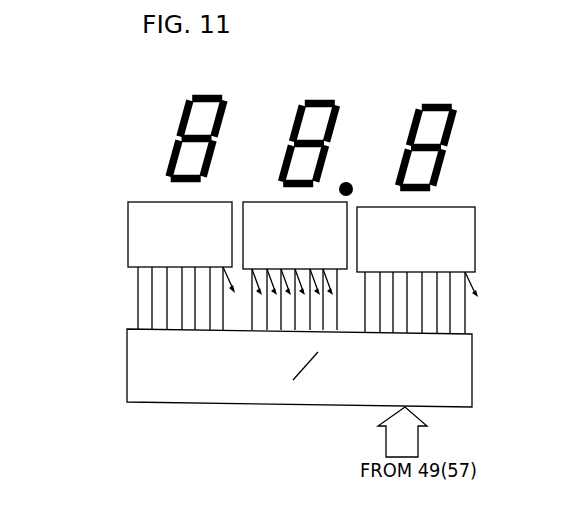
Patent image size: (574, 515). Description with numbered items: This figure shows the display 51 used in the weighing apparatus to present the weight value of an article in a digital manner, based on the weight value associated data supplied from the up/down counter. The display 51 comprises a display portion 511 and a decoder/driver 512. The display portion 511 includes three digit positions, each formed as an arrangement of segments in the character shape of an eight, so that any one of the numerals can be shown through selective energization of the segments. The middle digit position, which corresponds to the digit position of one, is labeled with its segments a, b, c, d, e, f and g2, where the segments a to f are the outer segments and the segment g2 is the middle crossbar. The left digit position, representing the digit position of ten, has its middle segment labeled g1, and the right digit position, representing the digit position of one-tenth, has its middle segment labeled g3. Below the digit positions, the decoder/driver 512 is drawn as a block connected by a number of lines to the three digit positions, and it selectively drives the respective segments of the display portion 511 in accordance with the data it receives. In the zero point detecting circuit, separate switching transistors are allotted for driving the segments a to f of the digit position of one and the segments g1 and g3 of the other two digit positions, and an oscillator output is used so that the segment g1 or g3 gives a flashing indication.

The display 51 is at (103, 113).
The display portion 511 is at (116, 182).
The decoder/driver 512 is at (135, 367).
The segment a is at (312, 101).
The segment b is at (338, 121).
The segment c is at (323, 167).
The segment d is at (296, 188).
The segment e is at (283, 163).
The segment f is at (297, 119).
The segment g1 is at (207, 138).
The segment g2 is at (320, 142).
The segment g3 is at (443, 148).